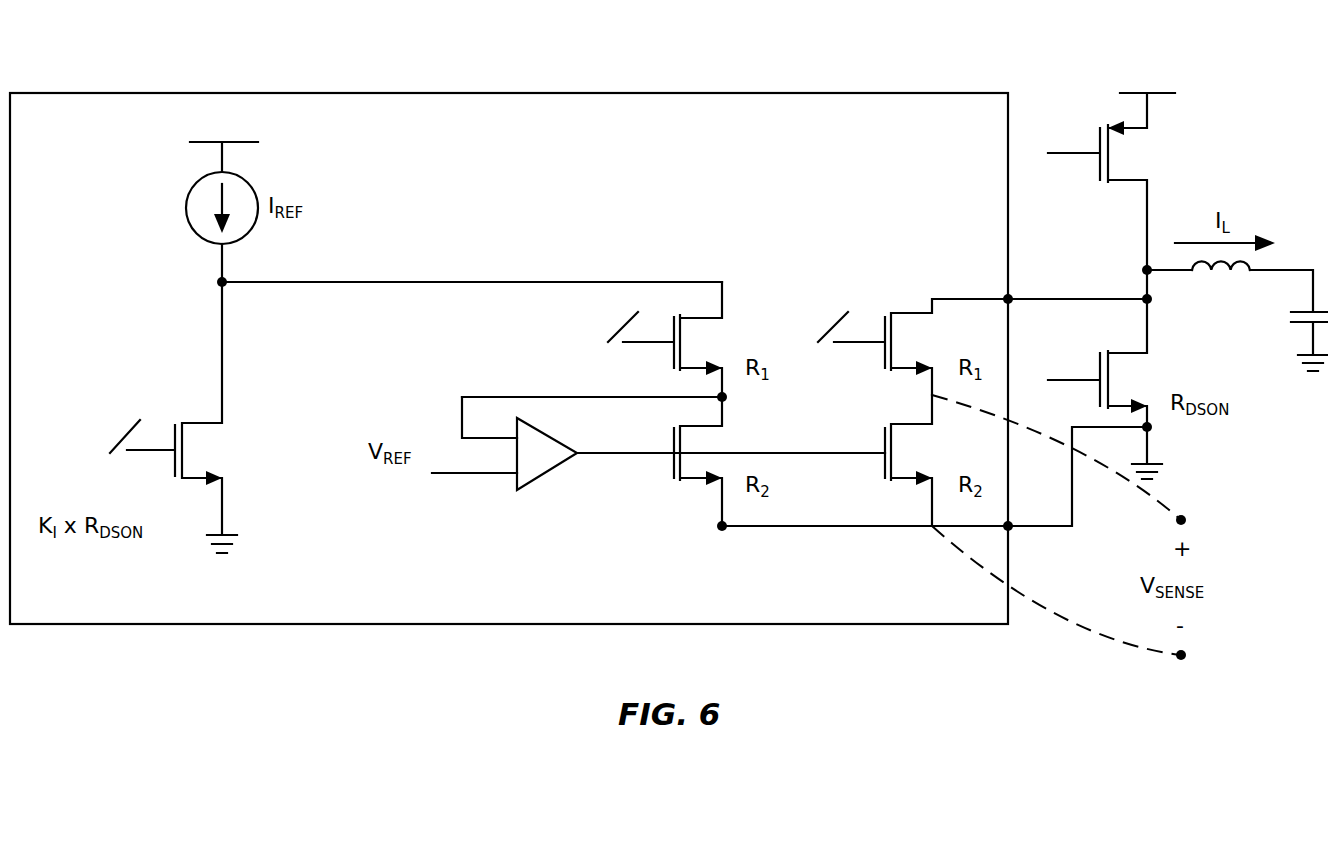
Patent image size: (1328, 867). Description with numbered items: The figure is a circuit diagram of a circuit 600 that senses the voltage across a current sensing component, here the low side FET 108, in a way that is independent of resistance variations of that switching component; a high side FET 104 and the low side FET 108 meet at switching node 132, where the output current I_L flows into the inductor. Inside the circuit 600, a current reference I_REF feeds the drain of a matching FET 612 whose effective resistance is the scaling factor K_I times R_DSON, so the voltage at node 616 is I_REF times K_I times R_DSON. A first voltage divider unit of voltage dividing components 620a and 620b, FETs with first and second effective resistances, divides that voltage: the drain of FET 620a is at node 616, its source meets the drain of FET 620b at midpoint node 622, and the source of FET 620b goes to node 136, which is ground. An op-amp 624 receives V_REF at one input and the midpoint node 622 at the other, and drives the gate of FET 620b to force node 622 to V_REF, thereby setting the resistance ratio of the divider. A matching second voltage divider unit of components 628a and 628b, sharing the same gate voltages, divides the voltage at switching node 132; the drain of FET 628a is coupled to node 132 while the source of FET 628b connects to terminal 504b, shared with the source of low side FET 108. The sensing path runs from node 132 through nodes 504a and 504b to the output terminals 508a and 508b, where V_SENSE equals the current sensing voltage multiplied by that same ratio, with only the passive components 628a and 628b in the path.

The circuit 600 is at (130, 626).
The node 616 is at (217, 282).
The matching FET 612 is at (200, 421).
The voltage dividing component 620a is at (678, 356).
The voltage dividing component 620b is at (678, 472).
The op-amp 624 is at (556, 442).
The midpoint node 622 is at (724, 399).
The node 136 is at (752, 528).
The voltage dividing component 628a is at (887, 358).
The voltage dividing component 628b is at (887, 470).
The node 504a is at (1010, 298).
The terminal 504b is at (1010, 528).
The switching node 132 is at (1145, 268).
The high side FET 104 is at (1156, 146).
The low side FET 108 is at (1158, 344).
The output terminal 508a is at (1183, 519).
The output terminal 508b is at (1183, 654).